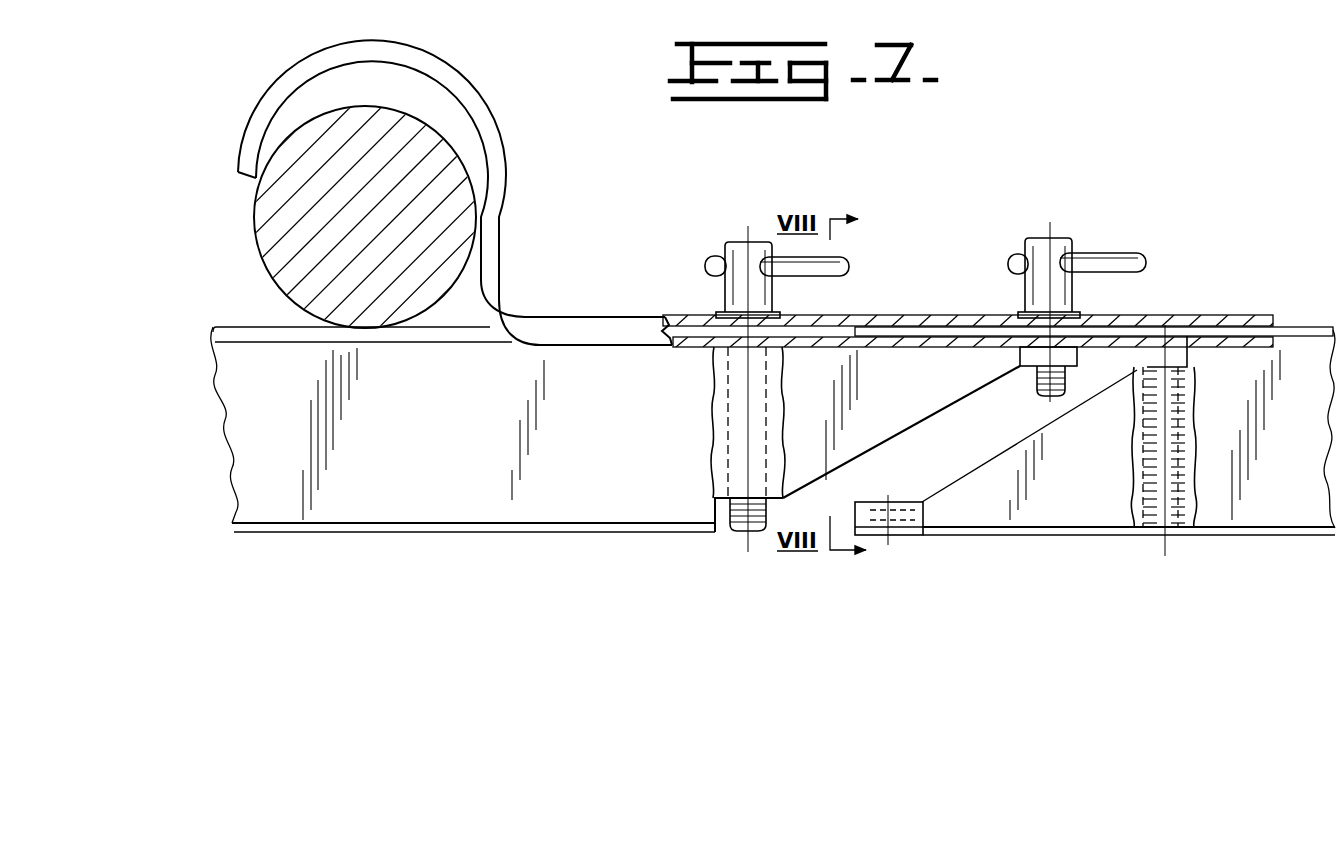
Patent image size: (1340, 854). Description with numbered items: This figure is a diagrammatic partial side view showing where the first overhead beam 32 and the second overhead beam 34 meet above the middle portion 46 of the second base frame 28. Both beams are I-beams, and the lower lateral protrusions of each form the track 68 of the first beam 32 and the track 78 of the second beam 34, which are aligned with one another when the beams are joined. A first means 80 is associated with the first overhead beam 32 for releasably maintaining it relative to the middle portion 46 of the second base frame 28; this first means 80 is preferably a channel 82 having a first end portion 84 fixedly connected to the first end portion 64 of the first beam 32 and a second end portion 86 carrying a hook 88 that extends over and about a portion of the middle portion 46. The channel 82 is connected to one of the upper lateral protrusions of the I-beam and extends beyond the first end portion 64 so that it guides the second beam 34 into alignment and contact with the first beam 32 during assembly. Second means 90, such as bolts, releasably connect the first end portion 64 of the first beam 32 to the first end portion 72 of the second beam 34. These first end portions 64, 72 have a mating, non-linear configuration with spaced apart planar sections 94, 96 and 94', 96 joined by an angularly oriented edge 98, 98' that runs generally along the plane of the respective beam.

The second base frame 28 is at (364, 216).
The first overhead beam 32 is at (1129, 432).
The second overhead beam 34 is at (534, 429).
The middle portion of the second base frame 46 is at (383, 231).
The first end portion of the first overhead beam 64 is at (1129, 467).
The track of the first overhead beam 68 is at (1254, 526).
The first end portion of the second overhead beam 72 is at (534, 465).
The track of the second overhead beam 78 is at (392, 523).
The first means 80 is at (455, 192).
The channel 82 is at (905, 316).
The first end portion of the channel 84 is at (1180, 308).
The second end portion of the channel 86 is at (566, 285).
The hook 88 is at (437, 97).
The second means 90 is at (746, 240).
The first planar section 94 is at (889, 502).
The first planar section 94' is at (775, 439).
The second planar section 96 is at (1033, 366).
The edge 98 is at (1029, 436).
The edge 98' is at (901, 432).